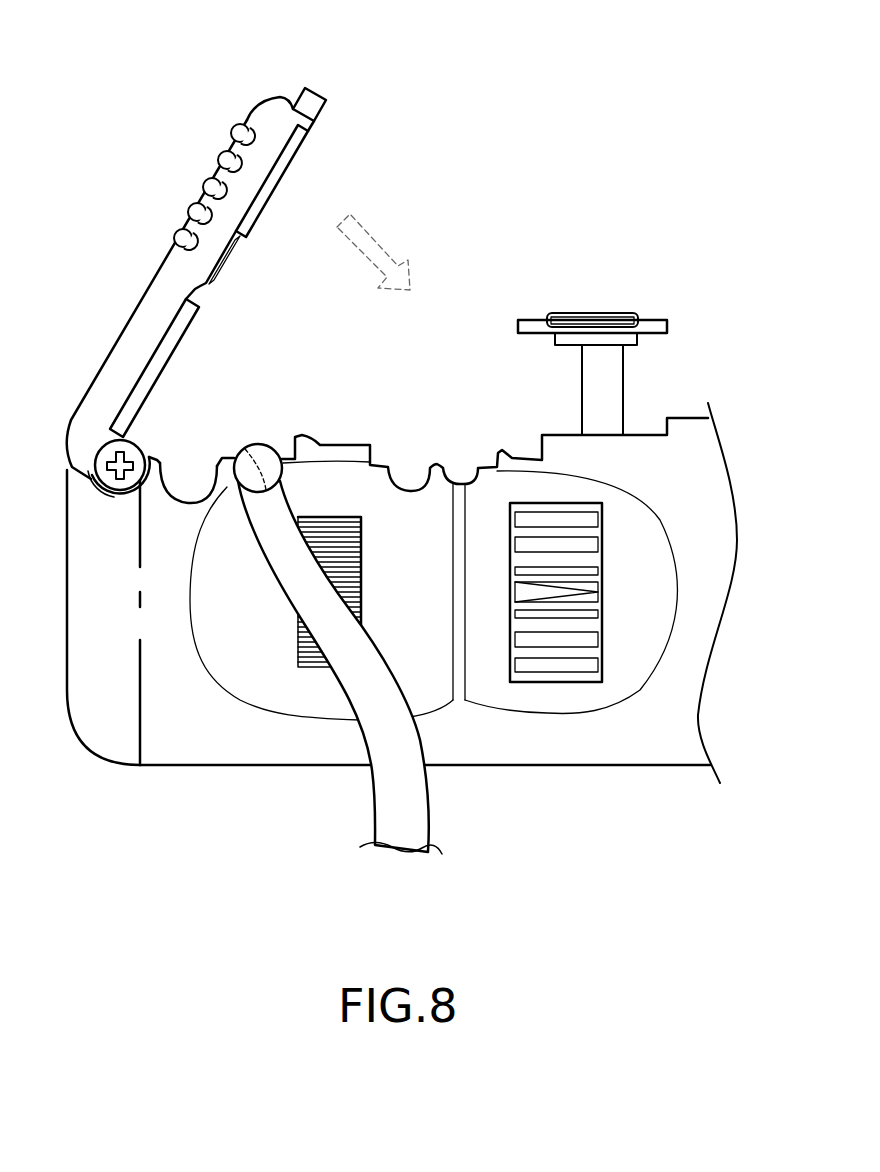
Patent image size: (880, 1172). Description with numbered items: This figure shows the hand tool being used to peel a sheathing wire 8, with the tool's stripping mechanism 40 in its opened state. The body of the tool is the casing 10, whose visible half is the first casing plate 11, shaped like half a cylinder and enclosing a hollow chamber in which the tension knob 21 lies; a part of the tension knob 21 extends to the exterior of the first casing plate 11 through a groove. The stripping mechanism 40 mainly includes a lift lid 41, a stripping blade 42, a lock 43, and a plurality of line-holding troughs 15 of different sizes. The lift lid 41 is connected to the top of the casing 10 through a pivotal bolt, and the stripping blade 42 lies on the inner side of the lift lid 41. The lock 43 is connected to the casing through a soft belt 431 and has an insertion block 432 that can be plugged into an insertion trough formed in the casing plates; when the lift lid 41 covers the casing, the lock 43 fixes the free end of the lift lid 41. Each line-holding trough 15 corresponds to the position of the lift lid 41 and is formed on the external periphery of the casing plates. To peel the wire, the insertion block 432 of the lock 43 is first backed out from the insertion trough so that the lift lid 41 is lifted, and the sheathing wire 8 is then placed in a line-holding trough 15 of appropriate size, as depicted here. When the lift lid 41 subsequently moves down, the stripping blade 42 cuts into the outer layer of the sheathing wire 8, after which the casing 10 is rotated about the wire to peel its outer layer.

The sheathing wire 8 is at (273, 443).
The casing 10 is at (240, 765).
The first casing plate 11 is at (292, 750).
The line-holding trough 15 is at (267, 490).
The tension knob 21 is at (568, 648).
The stripping mechanism 40 is at (194, 254).
The lift lid 41 is at (153, 310).
The stripping blade 42 is at (170, 347).
The lock 43 is at (658, 322).
The soft belt 431 is at (612, 381).
The insertion block 432 is at (570, 348).